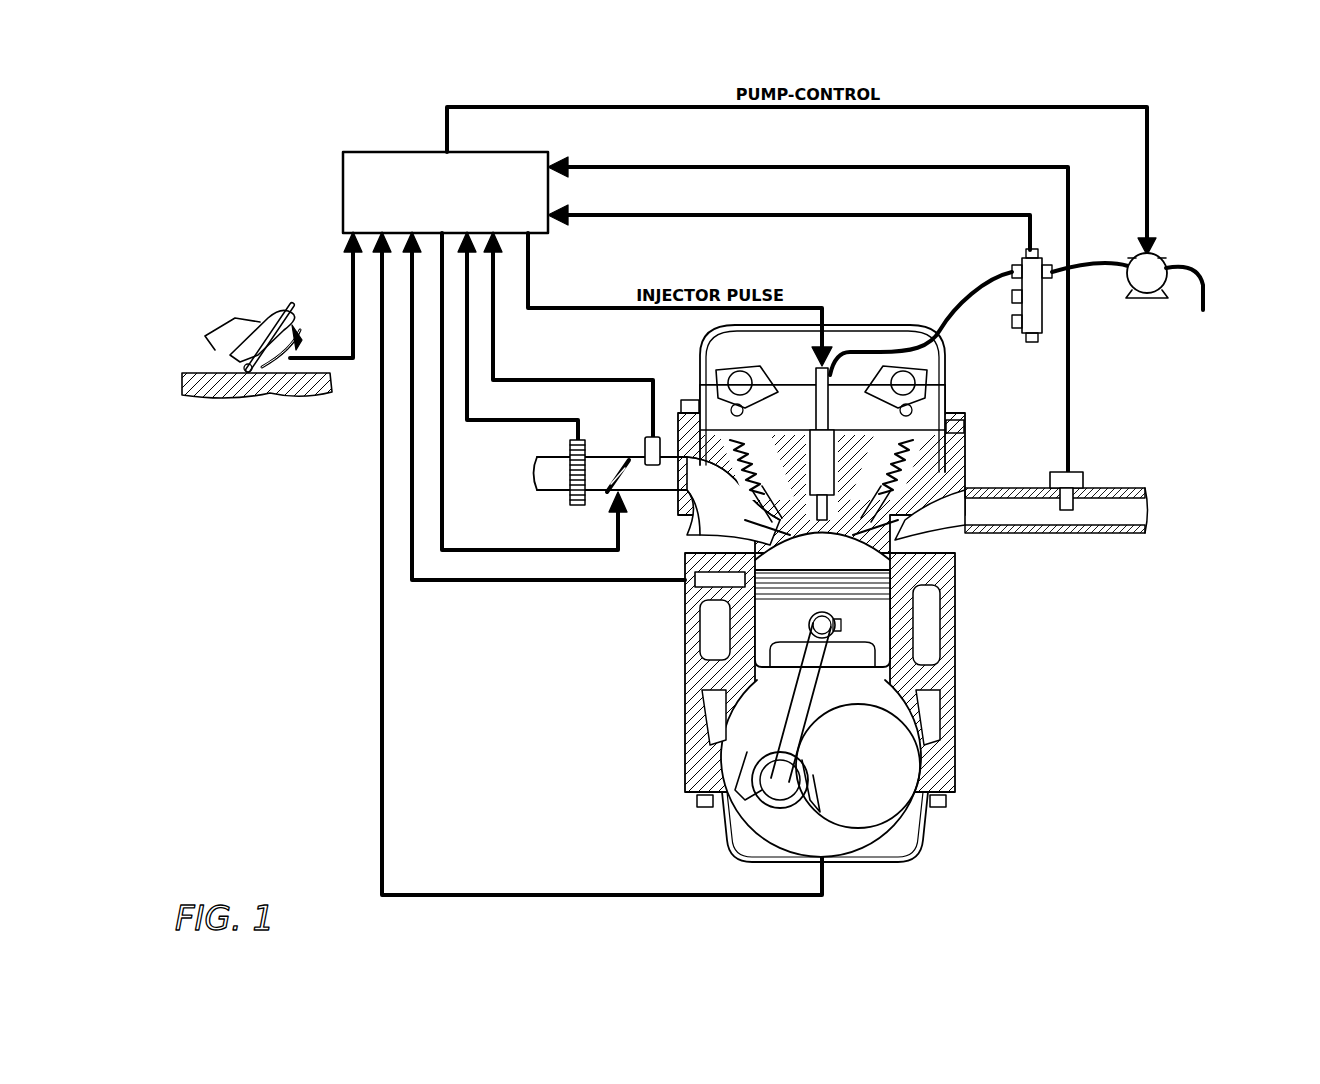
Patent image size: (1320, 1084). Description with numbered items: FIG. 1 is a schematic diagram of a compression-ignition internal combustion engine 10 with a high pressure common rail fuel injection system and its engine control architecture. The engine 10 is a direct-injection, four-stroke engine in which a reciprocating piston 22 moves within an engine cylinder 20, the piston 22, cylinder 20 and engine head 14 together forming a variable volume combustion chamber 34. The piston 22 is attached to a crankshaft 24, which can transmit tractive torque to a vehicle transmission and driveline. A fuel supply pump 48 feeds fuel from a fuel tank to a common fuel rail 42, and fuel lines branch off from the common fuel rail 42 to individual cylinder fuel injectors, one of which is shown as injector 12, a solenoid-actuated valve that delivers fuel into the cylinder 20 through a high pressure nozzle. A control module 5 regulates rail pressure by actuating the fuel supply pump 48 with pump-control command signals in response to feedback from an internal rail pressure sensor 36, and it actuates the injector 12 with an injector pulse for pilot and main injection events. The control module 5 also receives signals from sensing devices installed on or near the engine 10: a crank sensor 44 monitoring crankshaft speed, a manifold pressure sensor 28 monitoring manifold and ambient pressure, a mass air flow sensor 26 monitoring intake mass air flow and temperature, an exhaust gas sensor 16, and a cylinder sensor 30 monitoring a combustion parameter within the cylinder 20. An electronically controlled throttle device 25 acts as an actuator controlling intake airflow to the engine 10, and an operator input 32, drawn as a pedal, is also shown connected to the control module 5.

The control module 5 is at (530, 152).
The internal combustion engine 10 is at (823, 598).
The injector 12 is at (830, 372).
The engine head 14 is at (950, 485).
The exhaust gas sensor 16 is at (1083, 480).
The engine cylinder 20 is at (690, 546).
The piston 22 is at (822, 618).
The crankshaft 24 is at (827, 725).
The electronically controlled throttle device 25 is at (548, 548).
The mass air flow sensor 26 is at (512, 422).
The manifold pressure sensor 28 is at (583, 380).
The cylinder sensor 30 is at (588, 582).
The operator input pedal 32 is at (326, 356).
The combustion chamber 34 is at (820, 549).
The internal rail pressure sensor 36 is at (848, 215).
The common fuel rail 42 is at (1032, 325).
The crank sensor 44 is at (834, 846).
The fuel supply pump 48 is at (1150, 262).